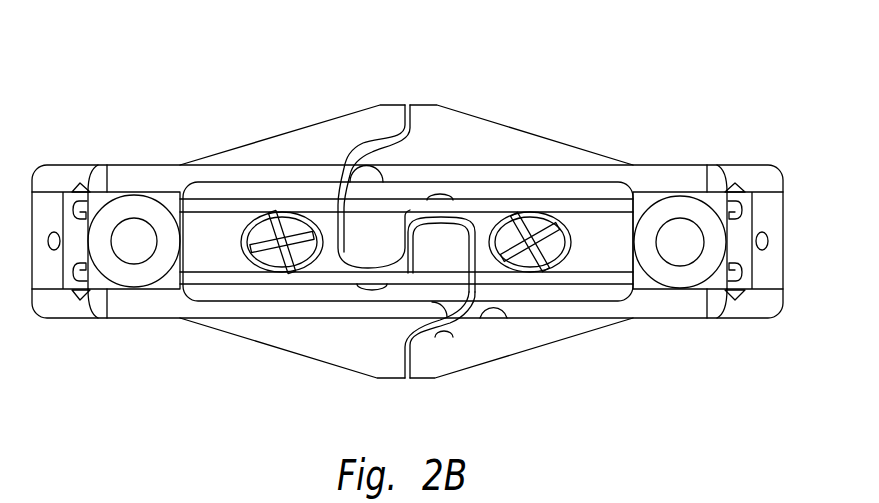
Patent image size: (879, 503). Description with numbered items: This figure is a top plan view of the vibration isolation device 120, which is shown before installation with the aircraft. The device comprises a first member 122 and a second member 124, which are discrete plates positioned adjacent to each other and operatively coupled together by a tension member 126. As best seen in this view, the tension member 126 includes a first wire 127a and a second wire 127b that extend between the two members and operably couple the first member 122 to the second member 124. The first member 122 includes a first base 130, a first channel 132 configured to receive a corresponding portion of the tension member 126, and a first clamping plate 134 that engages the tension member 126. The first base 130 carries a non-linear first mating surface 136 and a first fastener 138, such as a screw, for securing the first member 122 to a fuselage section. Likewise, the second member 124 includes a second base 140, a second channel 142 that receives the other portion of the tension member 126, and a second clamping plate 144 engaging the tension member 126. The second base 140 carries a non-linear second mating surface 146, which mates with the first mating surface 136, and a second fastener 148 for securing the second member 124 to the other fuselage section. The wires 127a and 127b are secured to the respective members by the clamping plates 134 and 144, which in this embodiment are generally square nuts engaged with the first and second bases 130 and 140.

The vibration isolation device 120 is at (685, 53).
The first member 122 is at (256, 120).
The second member 124 is at (482, 117).
The tension member 126 is at (502, 199).
The first wire 127a is at (597, 207).
The second wire 127b is at (598, 277).
The first base 130 is at (293, 342).
The first channel 132 is at (215, 190).
The first clamping plate 134 is at (102, 220).
The first mating surface 136 is at (377, 380).
The first fastener 138 is at (293, 225).
The second base 140 is at (530, 348).
The second channel 142 is at (568, 198).
The second clamping plate 144 is at (719, 230).
The second mating surface 146 is at (447, 370).
The second fastener 148 is at (562, 245).